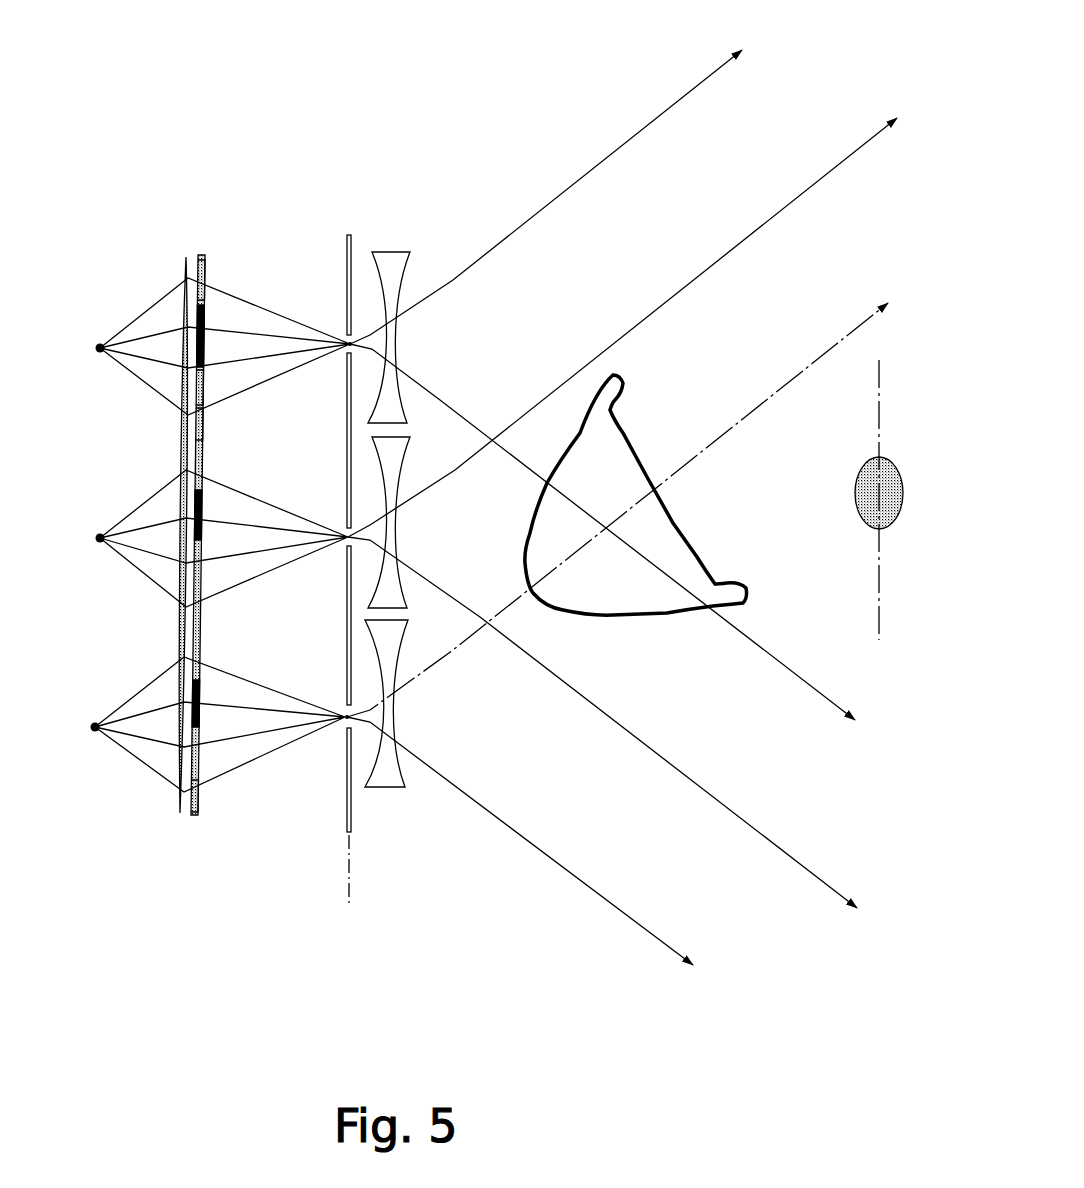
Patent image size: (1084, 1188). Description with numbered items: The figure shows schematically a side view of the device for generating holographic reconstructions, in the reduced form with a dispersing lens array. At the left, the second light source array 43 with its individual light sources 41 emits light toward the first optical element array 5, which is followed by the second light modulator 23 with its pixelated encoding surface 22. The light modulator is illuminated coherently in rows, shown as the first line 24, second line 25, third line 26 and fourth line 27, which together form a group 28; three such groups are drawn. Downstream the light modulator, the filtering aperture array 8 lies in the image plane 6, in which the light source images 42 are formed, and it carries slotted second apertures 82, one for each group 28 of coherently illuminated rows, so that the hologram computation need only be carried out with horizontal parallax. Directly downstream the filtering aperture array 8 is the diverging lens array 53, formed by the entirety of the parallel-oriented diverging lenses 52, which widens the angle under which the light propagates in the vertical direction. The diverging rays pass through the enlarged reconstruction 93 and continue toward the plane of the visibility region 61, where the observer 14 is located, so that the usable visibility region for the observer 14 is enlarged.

The first optical element array 5 is at (179, 818).
The image plane 6 is at (342, 883).
The filtering aperture array 8 is at (350, 828).
The observer 14 is at (890, 464).
The encoding surface 22 is at (193, 795).
The second light modulator 23 is at (200, 812).
The first line 24 is at (205, 269).
The second line 25 is at (205, 314).
The third line 26 is at (204, 380).
The fourth line 27 is at (203, 422).
The group 28 is at (216, 253).
The light sources 41 is at (98, 340).
The light source images 42 is at (348, 352).
The second light source array 43 is at (93, 792).
The diverging lenses 52 is at (411, 556).
The diverging lens array 53 is at (404, 796).
The plane of the visibility region 61 is at (880, 568).
The second apertures 82 is at (345, 730).
The enlarged reconstruction 93 is at (636, 495).